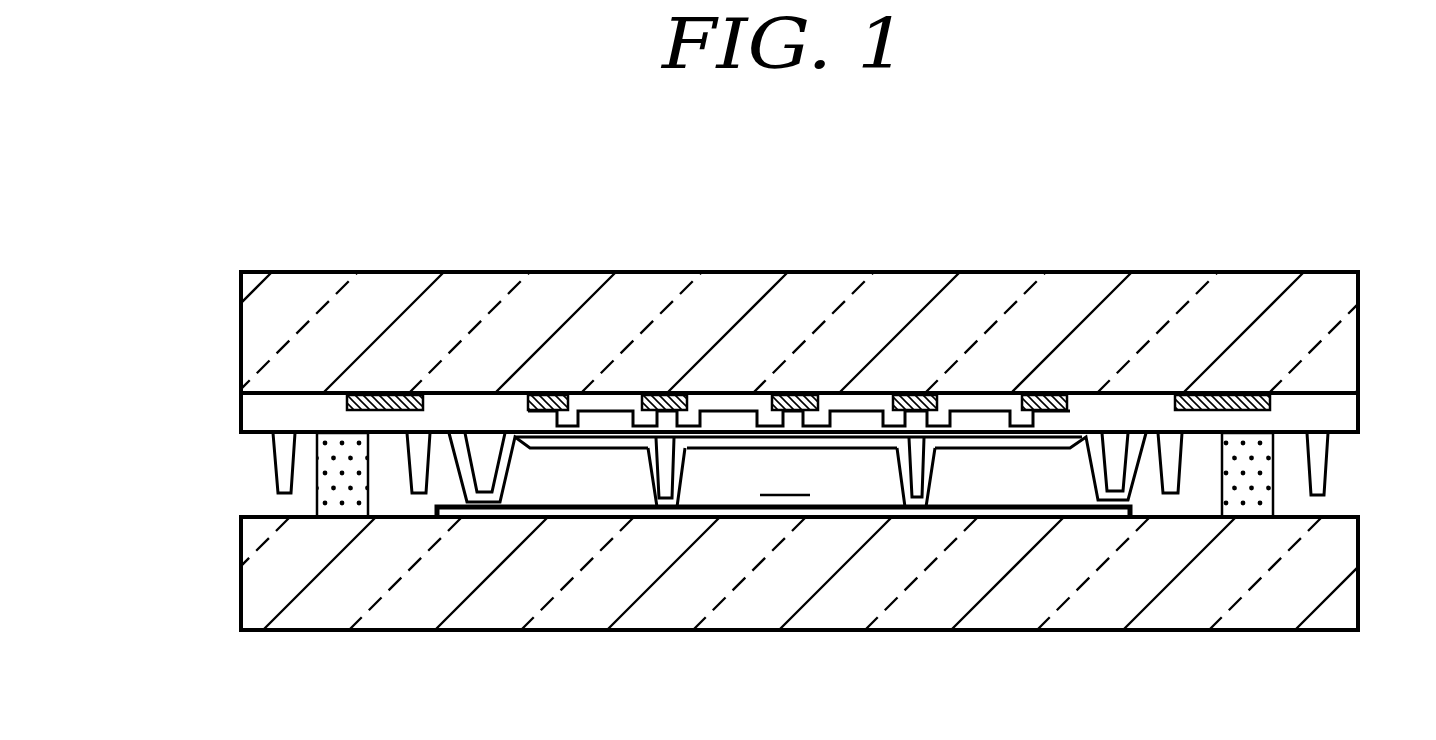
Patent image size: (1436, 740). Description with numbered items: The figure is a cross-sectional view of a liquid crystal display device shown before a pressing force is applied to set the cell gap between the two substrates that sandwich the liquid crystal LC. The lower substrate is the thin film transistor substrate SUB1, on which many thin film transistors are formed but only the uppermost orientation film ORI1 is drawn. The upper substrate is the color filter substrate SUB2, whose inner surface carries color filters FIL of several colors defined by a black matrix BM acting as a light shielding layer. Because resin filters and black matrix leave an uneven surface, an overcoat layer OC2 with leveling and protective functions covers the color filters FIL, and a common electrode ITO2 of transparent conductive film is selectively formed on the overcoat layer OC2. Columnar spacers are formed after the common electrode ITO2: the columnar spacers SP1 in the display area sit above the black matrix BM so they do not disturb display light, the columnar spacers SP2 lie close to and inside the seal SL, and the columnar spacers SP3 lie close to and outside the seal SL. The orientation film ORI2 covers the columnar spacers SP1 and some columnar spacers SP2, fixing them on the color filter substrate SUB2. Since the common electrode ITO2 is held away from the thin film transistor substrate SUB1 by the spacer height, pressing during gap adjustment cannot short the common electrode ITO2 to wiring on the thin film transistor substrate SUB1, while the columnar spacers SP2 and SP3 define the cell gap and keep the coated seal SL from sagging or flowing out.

The thin film transistor substrate SUB1 is at (197, 517).
The color filter substrate SUB2 is at (197, 255).
The columnar spacers in the display area SP1 is at (920, 470).
The columnar spacers inside the seal SP2 is at (418, 478).
The columnar spacers outside the seal SP3 is at (280, 440).
The seal SL is at (333, 497).
The black matrix BM is at (550, 397).
The color filters FIL is at (722, 410).
The overcoat layer OC2 is at (1127, 418).
The common electrode ITO2 is at (847, 440).
The orientation film ORI1 is at (627, 503).
The orientation film ORI2 is at (582, 456).
The liquid crystal LC is at (785, 474).